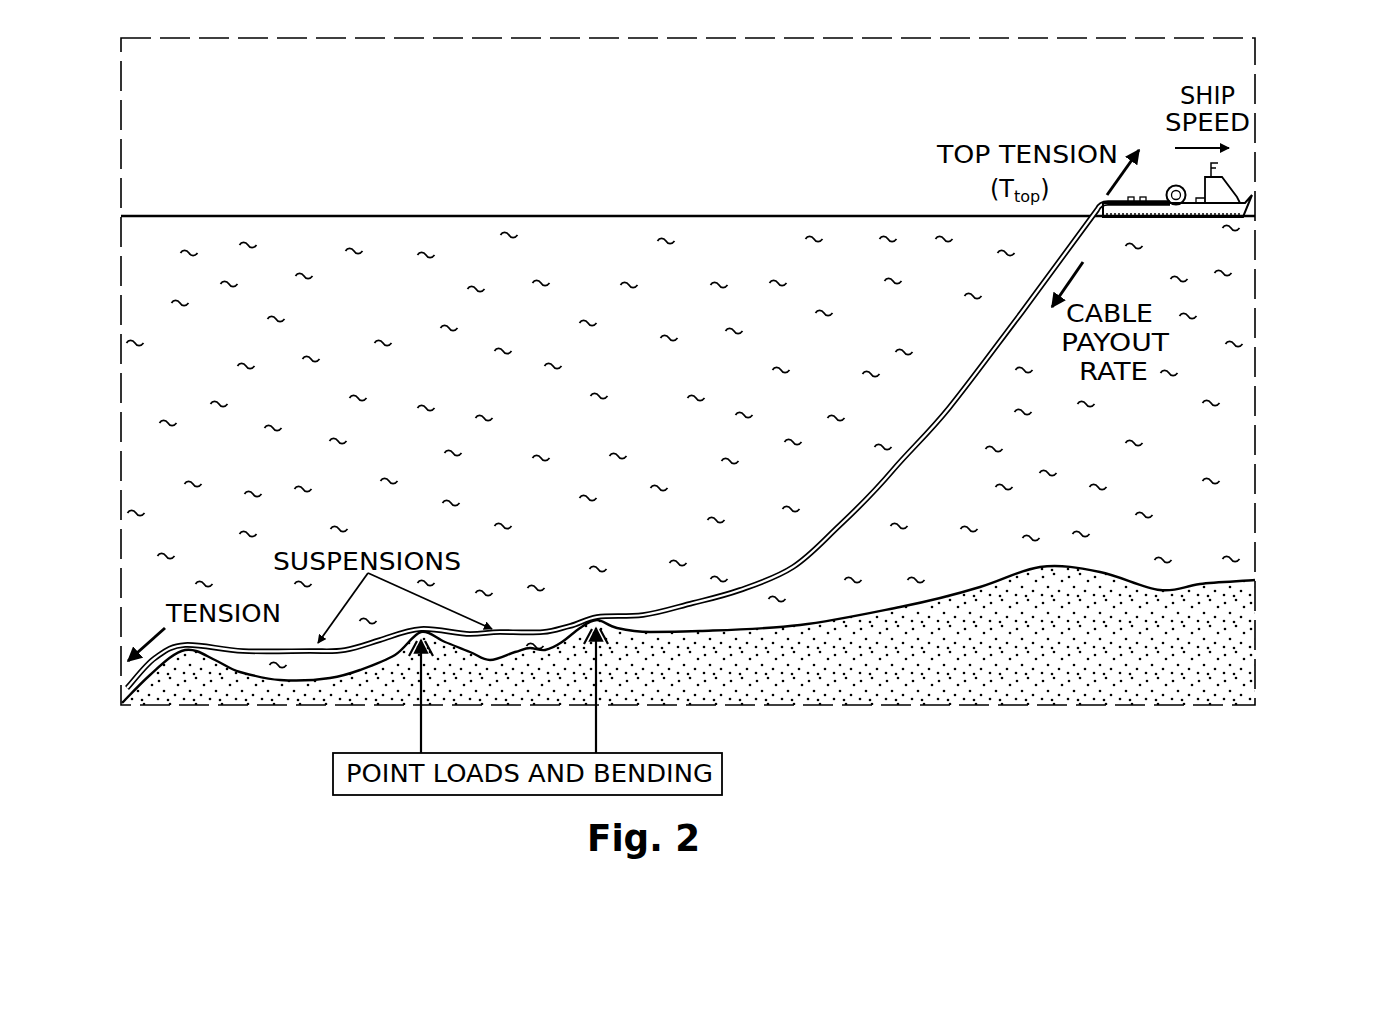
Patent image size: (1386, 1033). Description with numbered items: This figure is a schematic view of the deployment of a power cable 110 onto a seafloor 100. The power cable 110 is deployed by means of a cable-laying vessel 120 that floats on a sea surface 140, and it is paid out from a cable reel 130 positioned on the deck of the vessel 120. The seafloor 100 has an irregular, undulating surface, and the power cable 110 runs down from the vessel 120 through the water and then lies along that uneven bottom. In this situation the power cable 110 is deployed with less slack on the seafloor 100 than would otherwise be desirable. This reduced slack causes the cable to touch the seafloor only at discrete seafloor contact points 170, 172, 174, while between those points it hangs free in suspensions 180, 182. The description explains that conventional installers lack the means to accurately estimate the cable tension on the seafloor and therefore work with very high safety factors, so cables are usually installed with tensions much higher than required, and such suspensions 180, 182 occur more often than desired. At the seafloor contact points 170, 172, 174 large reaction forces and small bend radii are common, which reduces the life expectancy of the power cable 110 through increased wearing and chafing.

The seafloor 100 is at (1200, 582).
The power cable 110 is at (893, 472).
The cable-laying vessel 120 is at (1247, 200).
The cable reel 130 is at (1165, 192).
The sea surface 140 is at (288, 216).
The seafloor contact point 170 is at (182, 650).
The seafloor contact point 172 is at (451, 645).
The seafloor contact point 174 is at (622, 628).
The suspension 180 is at (310, 660).
The suspension 182 is at (500, 645).